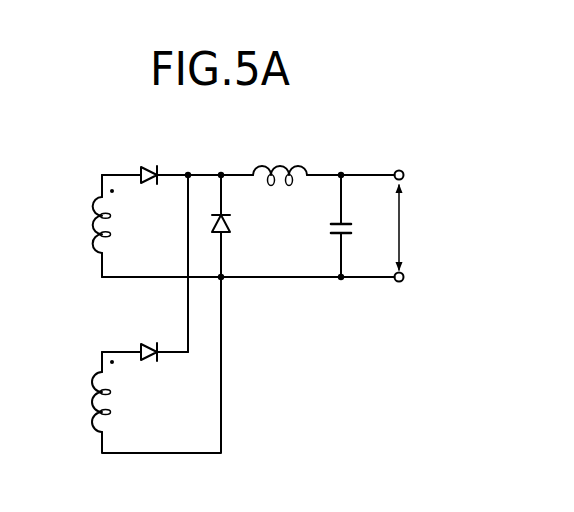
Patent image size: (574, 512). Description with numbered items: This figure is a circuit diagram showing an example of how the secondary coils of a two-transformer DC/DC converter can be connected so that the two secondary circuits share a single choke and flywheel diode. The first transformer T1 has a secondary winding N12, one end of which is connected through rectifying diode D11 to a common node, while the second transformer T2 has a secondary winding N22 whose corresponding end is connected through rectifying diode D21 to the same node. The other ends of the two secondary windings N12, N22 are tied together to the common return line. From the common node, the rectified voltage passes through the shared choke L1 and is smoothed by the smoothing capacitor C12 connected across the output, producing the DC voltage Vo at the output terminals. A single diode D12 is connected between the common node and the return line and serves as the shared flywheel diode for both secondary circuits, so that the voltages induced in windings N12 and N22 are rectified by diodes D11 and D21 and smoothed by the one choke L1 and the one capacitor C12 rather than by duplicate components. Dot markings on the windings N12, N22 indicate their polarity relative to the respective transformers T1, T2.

The transformer T1 is at (92, 216).
The secondary winding N12 is at (119, 225).
The diode D11 is at (154, 161).
The diode D12 is at (238, 226).
The choke L1 is at (280, 188).
The smoothing capacitor C12 is at (358, 226).
The DC voltage Vo is at (400, 227).
The transformer T2 is at (92, 355).
The secondary winding N22 is at (119, 402).
The diode D21 is at (154, 337).